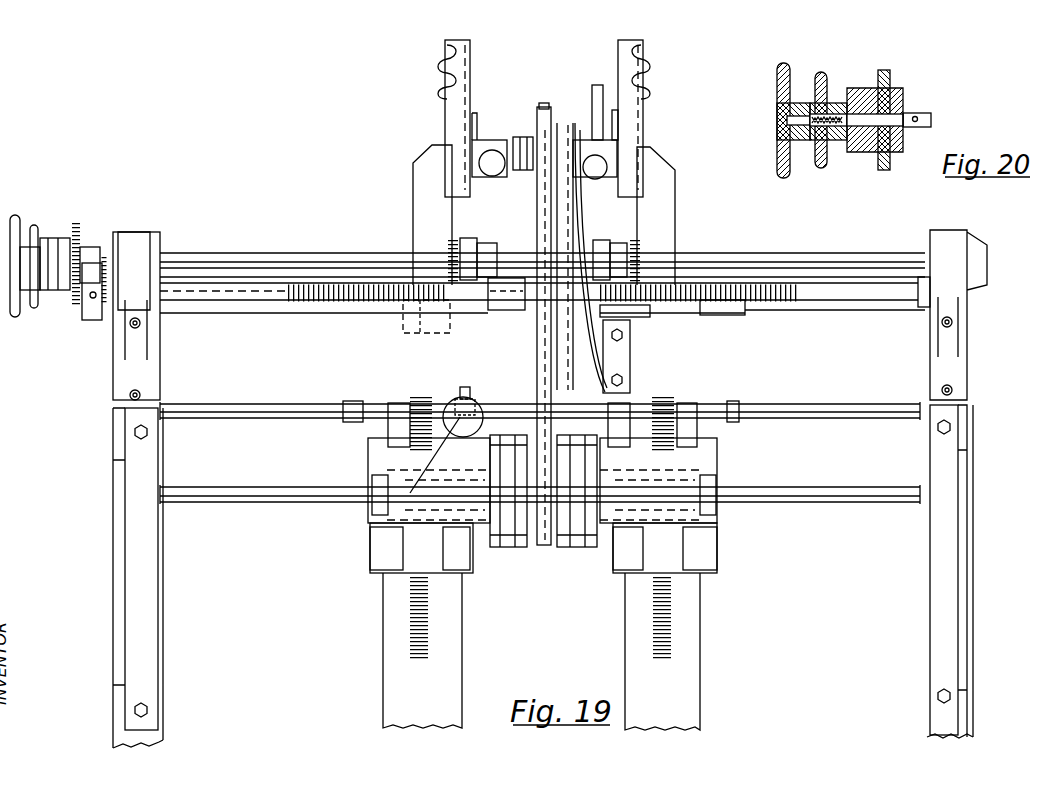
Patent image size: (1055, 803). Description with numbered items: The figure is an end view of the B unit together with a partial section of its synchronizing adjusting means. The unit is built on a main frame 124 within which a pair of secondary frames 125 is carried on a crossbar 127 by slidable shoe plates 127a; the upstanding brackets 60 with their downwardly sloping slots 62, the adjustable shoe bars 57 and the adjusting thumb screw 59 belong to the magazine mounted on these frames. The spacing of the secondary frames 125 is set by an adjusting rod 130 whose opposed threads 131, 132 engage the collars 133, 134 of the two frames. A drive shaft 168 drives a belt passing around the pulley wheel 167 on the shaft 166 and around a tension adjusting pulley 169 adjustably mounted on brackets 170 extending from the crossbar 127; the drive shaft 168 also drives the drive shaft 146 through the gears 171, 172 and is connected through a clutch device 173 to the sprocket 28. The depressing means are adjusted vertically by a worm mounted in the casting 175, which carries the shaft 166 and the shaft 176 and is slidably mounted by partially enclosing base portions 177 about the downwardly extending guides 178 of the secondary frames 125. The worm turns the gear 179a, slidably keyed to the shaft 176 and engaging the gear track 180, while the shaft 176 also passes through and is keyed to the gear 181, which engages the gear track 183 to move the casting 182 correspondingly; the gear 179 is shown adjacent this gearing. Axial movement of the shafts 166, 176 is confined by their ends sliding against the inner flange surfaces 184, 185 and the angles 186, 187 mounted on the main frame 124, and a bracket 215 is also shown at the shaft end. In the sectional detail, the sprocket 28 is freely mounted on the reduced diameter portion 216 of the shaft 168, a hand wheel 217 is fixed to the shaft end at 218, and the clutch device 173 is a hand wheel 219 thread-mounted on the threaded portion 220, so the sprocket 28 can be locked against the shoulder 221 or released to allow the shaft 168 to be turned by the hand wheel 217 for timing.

In FIG. 19, the sprocket 28 is at (78, 222).
In FIG. 20, the sprocket 28 is at (886, 76).
In FIG. 19, the shoe bars 57 is at (492, 140).
In FIG. 19, the adjusting thumb screw 59 is at (492, 176).
In FIG. 19, the upstanding brackets 60 is at (447, 98).
In FIG. 19, the downwardly sloping slots 62 is at (447, 50).
In FIG. 19, the main frame 124 is at (106, 500).
In FIG. 19, the secondary frames 125 is at (409, 158).
In FIG. 19, the crossbar 127 is at (248, 416).
In FIG. 19, the slidable shoe plate 127a is at (745, 318).
In FIG. 19, the adjusting rod 130 is at (265, 285).
In FIG. 19, the opposed thread 131 is at (350, 285).
In FIG. 19, the opposed thread 132 is at (760, 285).
In FIG. 19, the collar 133 is at (495, 310).
In FIG. 19, the collar 134 is at (640, 316).
In FIG. 19, the drive shaft 146 is at (405, 331).
In FIG. 19, the shaft 166 is at (308, 487).
In FIG. 19, the pulley wheel 167 is at (530, 547).
In FIG. 19, the drive shaft 168 is at (222, 255).
In FIG. 20, the drive shaft 168 is at (918, 118).
In FIG. 19, the tension adjusting pulley 169 is at (540, 107).
In FIG. 19, the brackets 170 is at (630, 350).
In FIG. 19, the gear 171 is at (455, 240).
In FIG. 19, the gear 172 is at (447, 333).
In FIG. 19, the clutch device 173 is at (57, 200).
In FIG. 20, the clutch device 173 is at (846, 149).
In FIG. 19, the casting 175 is at (366, 461).
In FIG. 19, the shaft 176 is at (310, 393).
In FIG. 19, the base portions 177 is at (405, 540).
In FIG. 19, the downwardly extending guides 178 is at (462, 625).
In FIG. 19, the gear 179 is at (483, 417).
In FIG. 19, the gear 179a is at (420, 397).
In FIG. 19, the gear track 180 is at (419, 610).
In FIG. 19, the gear 181 is at (668, 397).
In FIG. 19, the casting 182 is at (723, 534).
In FIG. 19, the gear track 183 is at (672, 640).
In FIG. 19, the inner flange surface 184 is at (163, 538).
In FIG. 19, the inner flange surface 185 is at (930, 548).
In FIG. 19, the angle 186 is at (163, 578).
In FIG. 19, the angle 187 is at (940, 584).
In FIG. 19, the bracket 215 is at (92, 320).
In FIG. 20, the reduced diameter portion 216 is at (868, 100).
In FIG. 19, the hand wheel 217 is at (14, 215).
In FIG. 20, the hand wheel 217 is at (778, 92).
In FIG. 20, the fixing of hand wheel 218 is at (790, 122).
In FIG. 19, the hand wheel 219 is at (33, 310).
In FIG. 20, the hand wheel 219 is at (818, 75).
In FIG. 20, the threaded portion 220 is at (820, 142).
In FIG. 20, the shoulder 221 is at (915, 116).